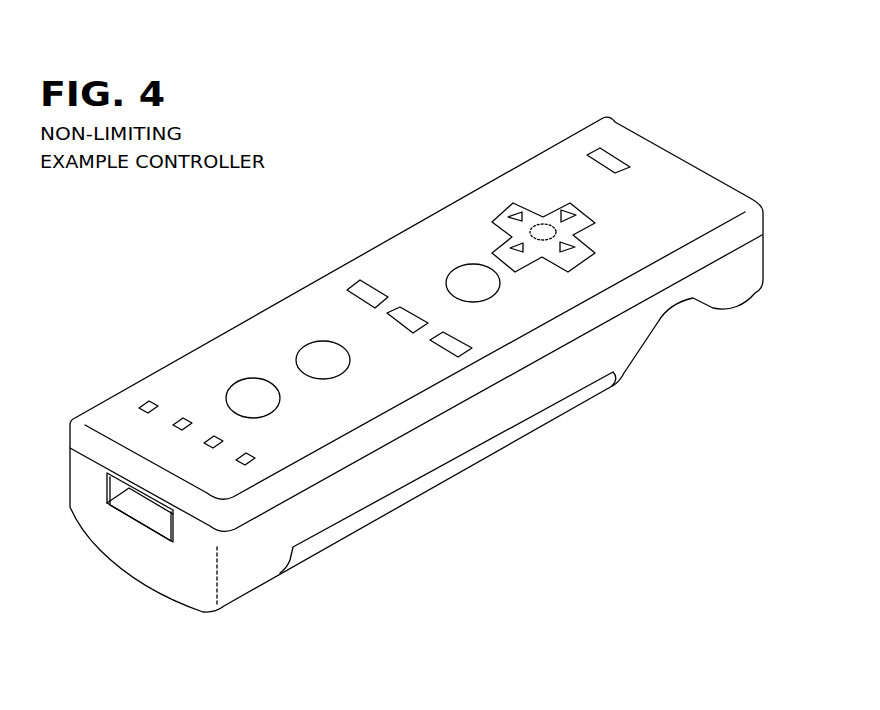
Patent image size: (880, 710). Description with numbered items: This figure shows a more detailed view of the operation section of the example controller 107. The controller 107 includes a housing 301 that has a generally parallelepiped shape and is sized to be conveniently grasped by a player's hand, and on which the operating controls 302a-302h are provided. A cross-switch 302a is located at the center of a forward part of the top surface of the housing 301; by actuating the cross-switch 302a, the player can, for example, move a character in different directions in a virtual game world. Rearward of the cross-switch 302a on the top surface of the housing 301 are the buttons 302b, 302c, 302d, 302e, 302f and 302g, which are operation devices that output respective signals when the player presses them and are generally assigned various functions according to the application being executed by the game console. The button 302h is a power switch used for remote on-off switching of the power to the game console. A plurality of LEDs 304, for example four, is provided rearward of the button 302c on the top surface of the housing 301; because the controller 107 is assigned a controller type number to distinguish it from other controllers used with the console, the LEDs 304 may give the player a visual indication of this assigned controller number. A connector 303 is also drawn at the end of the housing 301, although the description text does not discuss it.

The controller 107 is at (539, 128).
The housing 301 is at (110, 405).
The cross-switch 302a is at (550, 216).
The button 302b is at (323, 358).
The button 302c is at (250, 392).
The button 302d is at (472, 276).
The button 302e is at (367, 293).
The button 302f is at (405, 322).
The button 302g is at (458, 350).
The button 302h is at (608, 157).
The connector 303 is at (150, 509).
The LEDs 304 is at (247, 465).